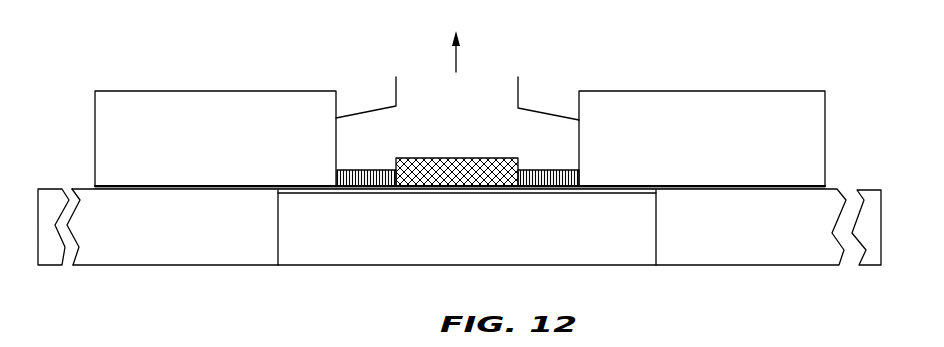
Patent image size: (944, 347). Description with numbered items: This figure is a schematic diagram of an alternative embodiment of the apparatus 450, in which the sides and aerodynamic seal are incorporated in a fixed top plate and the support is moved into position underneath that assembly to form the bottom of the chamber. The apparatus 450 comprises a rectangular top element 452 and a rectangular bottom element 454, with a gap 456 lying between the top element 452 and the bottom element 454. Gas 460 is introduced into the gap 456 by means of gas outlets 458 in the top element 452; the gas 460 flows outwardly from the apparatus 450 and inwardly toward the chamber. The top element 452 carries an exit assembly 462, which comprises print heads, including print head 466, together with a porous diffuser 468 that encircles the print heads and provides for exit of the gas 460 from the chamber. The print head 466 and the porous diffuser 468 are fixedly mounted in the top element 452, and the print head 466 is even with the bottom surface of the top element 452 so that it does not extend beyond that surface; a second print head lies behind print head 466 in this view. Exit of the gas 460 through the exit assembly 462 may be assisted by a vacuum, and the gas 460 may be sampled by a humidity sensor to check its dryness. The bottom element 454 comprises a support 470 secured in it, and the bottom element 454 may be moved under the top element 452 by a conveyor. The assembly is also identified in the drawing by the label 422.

The device assembly 422 is at (556, 86).
The apparatus 450 is at (695, 76).
The top element 452 is at (218, 90).
The bottom element 454 is at (227, 266).
The gap 456 is at (95, 187).
The gas outlets 458 is at (128, 185).
The gas 460 is at (456, 54).
The exit assembly 462 is at (587, 191).
The print head 466 is at (478, 157).
The porous diffuser 468 is at (368, 168).
The support 470 is at (408, 196).